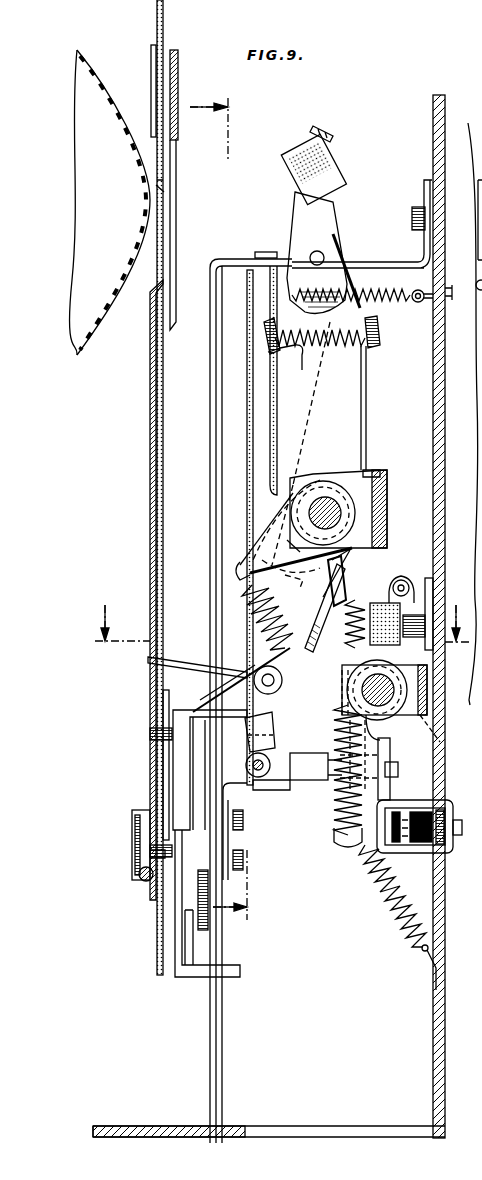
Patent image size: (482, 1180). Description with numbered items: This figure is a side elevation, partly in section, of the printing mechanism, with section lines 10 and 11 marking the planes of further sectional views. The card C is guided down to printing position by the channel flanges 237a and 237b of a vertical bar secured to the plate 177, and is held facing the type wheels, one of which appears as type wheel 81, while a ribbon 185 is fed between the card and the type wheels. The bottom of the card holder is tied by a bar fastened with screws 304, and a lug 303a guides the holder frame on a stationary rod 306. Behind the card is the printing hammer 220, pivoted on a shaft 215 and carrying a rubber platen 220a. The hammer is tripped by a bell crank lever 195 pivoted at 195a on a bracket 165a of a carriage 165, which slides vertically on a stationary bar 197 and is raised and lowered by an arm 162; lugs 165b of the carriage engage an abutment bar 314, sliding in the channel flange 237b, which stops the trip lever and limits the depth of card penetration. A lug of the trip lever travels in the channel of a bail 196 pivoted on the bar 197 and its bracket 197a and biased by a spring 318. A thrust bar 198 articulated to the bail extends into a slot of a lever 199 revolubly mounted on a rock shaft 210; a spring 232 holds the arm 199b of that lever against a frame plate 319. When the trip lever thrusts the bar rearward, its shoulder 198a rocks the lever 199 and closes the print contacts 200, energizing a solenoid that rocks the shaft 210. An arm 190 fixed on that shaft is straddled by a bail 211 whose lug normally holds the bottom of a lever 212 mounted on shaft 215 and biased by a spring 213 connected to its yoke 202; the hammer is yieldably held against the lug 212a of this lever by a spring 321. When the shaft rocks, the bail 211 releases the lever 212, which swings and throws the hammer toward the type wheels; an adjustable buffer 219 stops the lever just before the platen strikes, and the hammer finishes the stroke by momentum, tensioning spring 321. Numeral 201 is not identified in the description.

The channel flange 237a is at (153, 47).
The card C is at (164, 27).
The type wheel 81 is at (100, 102).
The plate 177 is at (179, 77).
The channel flange 237b is at (150, 392).
The section line 10 is at (229, 509).
The ribbon 185 is at (162, 187).
The rubber platen 220a is at (297, 148).
The printing hammer 220 is at (292, 222).
The stationary bar 197 is at (224, 259).
The spring 318 is at (375, 287).
The lug 212a is at (378, 320).
The spring 321 is at (345, 340).
The lever 212 is at (322, 370).
The bail 196 is at (260, 427).
The shaft 215 is at (330, 510).
The pawl 201 is at (290, 540).
The yoke 202 is at (272, 549).
The adjustable buffer 219 is at (412, 575).
The arm 190 is at (322, 610).
The spring 232 is at (368, 620).
The pivot 195a is at (255, 668).
The section line 11 is at (283, 634).
The bell crank lever 195 is at (195, 667).
The bracket 165a is at (203, 697).
The abutment bar 314 is at (163, 707).
The lug 165b is at (150, 736).
The screw 304 is at (140, 812).
The lug 303a is at (150, 857).
The stationary rod 306 is at (145, 882).
The arm 162 is at (200, 915).
The carriage 165 is at (178, 970).
The bracket 197a is at (265, 800).
The thrust bar 198 is at (316, 782).
The lever 199 is at (350, 845).
The spring 213 is at (383, 895).
The bail 211 is at (350, 722).
The rock shaft 210 is at (385, 718).
The shoulder 198a is at (392, 751).
The print contacts 200 is at (395, 812).
The frame plate 319 is at (447, 736).
The arm 199b is at (426, 700).